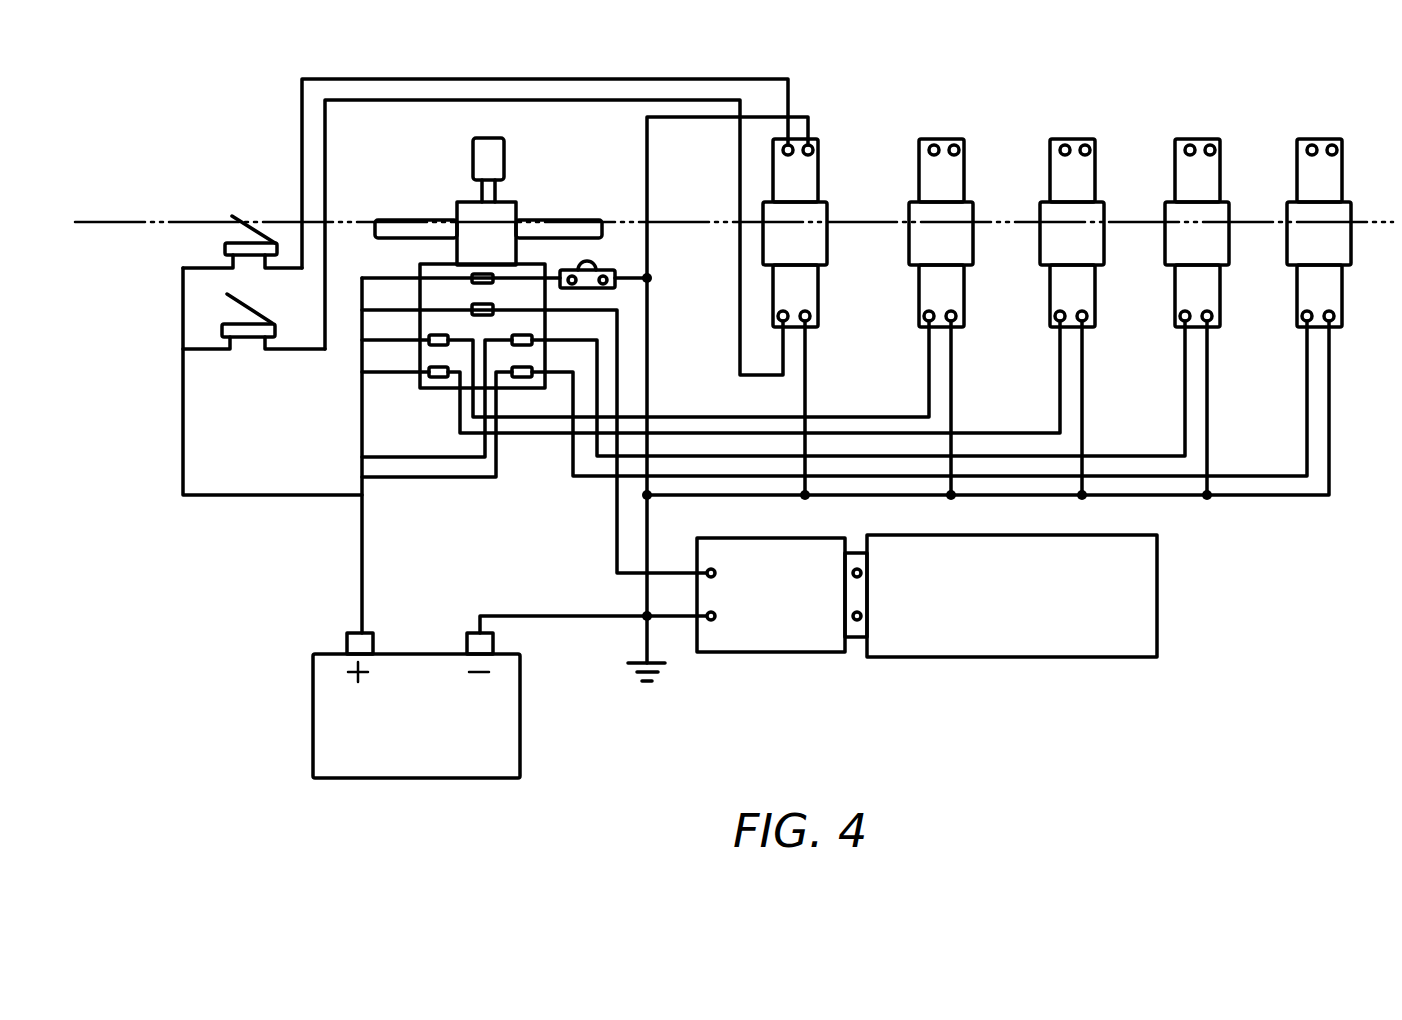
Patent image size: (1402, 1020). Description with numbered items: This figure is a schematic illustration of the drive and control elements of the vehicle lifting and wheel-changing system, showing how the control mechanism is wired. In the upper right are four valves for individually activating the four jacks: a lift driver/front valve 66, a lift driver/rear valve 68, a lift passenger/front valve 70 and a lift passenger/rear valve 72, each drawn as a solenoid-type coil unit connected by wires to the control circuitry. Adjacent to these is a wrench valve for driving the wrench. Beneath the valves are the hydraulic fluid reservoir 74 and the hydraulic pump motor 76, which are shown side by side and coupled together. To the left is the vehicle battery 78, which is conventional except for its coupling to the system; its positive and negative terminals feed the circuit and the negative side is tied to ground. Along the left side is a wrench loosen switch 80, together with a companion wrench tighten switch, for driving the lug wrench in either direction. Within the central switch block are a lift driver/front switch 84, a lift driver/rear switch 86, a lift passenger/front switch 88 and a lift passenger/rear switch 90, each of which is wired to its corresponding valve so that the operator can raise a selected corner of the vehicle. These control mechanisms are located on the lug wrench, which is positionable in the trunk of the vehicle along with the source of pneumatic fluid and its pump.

The lift driver/front valve 66 is at (962, 212).
The lift driver/rear valve 68 is at (1097, 212).
The lift passenger/front valve 70 is at (1217, 212).
The lift passenger/rear valve 72 is at (1340, 212).
The hydraulic fluid reservoir 74 is at (1062, 630).
The hydraulic pump motor 76 is at (778, 617).
The vehicle battery 78 is at (490, 733).
The wrench loosen switch 80 is at (240, 248).
The lift driver/front switch 84 is at (432, 336).
The lift driver/rear switch 86 is at (228, 326).
The lift passenger/front switch 88 is at (535, 338).
The lift passenger/rear switch 90 is at (535, 371).